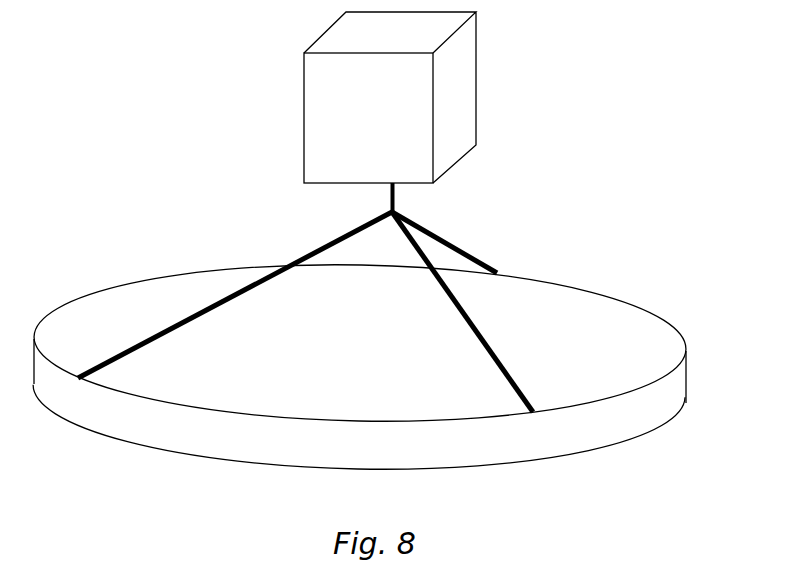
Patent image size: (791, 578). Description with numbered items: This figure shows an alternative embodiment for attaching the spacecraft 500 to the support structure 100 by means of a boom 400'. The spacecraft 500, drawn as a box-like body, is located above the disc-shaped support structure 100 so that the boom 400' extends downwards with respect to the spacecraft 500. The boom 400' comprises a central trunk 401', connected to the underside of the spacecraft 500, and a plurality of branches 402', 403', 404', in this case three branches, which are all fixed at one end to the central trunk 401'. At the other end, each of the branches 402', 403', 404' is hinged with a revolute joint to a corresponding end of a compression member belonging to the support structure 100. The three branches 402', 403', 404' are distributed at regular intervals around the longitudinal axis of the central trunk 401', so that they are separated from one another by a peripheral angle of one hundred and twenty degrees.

The support structure 100 is at (133, 277).
The spacecraft 500 is at (481, 68).
The boom 400' is at (388, 302).
The central trunk 401' is at (475, 194).
The branch 402' is at (329, 295).
The branch 403' is at (520, 242).
The branch 404' is at (545, 312).